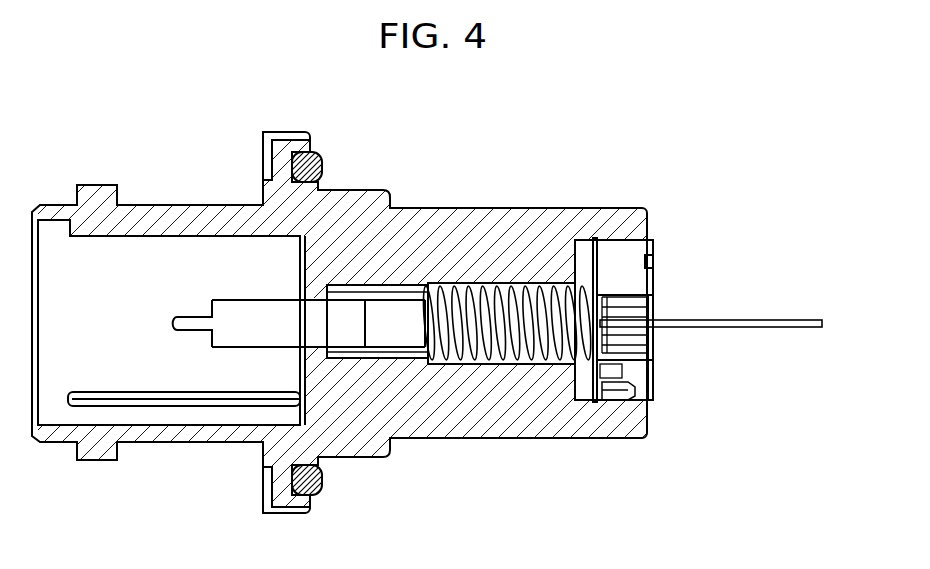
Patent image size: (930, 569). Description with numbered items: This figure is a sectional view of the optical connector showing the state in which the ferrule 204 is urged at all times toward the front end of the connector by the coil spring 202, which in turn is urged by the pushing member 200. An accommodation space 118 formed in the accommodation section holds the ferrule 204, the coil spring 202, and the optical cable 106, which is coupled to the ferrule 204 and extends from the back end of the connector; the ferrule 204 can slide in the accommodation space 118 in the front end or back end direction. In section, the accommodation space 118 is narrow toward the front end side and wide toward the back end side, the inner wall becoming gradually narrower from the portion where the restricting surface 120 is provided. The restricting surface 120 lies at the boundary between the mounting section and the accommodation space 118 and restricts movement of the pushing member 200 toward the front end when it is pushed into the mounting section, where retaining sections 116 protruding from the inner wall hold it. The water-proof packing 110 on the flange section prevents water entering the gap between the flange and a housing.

The optical cable 106 is at (778, 320).
The water-proof packing 110 is at (316, 153).
The retaining section 116 is at (652, 402).
The accommodation space 118 is at (388, 284).
The restricting surface 120 is at (578, 378).
The pushing member 200 is at (655, 247).
The coil spring 202 is at (512, 284).
The ferrule 204 is at (402, 358).